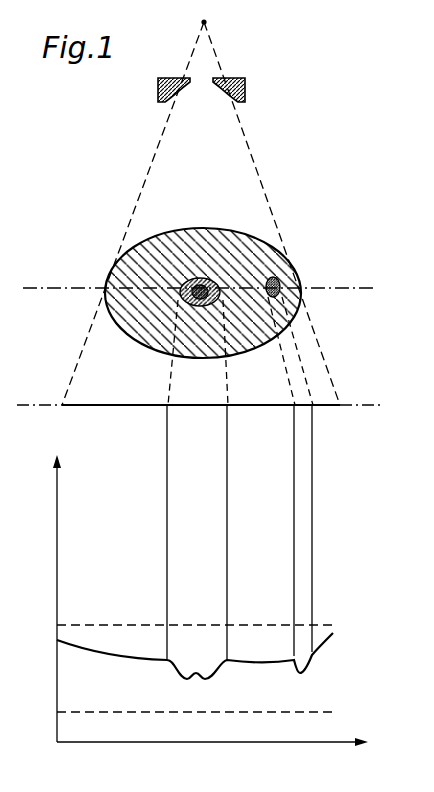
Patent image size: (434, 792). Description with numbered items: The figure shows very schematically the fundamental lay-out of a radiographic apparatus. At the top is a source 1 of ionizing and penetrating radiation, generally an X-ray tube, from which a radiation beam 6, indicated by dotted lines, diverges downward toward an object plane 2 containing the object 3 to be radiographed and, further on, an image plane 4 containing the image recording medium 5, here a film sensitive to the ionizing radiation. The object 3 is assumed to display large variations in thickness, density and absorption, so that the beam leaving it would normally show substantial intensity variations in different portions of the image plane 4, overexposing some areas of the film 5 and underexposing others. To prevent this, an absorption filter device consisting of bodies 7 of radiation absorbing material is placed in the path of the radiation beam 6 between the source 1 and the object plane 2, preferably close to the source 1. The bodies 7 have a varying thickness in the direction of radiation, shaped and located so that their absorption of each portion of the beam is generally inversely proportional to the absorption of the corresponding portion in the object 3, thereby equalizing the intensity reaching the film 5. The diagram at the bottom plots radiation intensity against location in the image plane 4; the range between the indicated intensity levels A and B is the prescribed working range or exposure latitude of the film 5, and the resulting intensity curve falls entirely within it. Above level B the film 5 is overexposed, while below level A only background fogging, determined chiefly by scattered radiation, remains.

The source 1 is at (207, 22).
The object plane 2 is at (350, 288).
The object 3 is at (207, 238).
The image plane 4 is at (360, 405).
The image recording medium 5 is at (140, 405).
The radiation beam 6 is at (143, 190).
The bodies of radiation absorbing material 7 is at (168, 78).
The intensity level A is at (117, 712).
The intensity level B is at (117, 625).